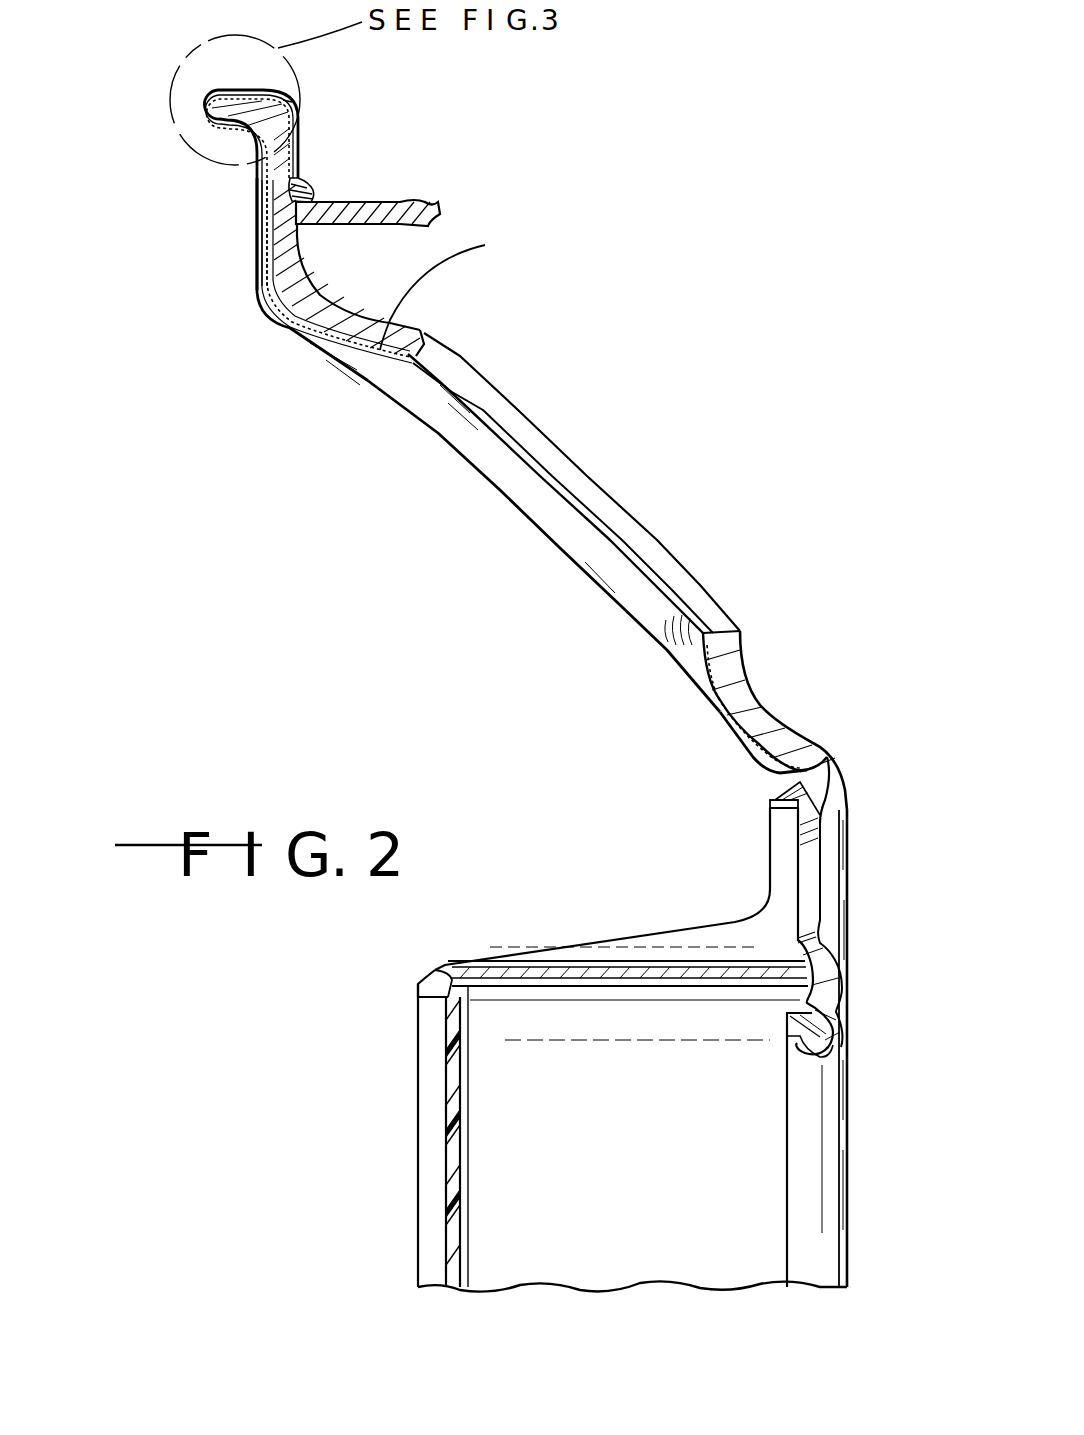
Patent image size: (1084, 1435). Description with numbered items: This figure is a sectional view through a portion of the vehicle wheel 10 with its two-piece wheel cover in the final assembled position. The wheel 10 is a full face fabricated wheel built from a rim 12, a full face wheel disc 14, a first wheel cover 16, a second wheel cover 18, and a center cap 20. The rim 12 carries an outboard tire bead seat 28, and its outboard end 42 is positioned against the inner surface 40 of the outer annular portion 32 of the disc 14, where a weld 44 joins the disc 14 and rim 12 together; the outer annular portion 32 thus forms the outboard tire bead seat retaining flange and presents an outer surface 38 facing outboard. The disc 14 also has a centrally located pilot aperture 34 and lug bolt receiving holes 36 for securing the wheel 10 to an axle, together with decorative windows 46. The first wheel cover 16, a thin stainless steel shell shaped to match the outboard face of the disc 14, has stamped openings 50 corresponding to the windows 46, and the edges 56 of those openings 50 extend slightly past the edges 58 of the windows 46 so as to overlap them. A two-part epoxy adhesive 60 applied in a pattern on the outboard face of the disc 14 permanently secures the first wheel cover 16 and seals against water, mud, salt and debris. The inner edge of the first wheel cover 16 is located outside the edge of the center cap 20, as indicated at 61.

The vehicle wheel 10 is at (690, 330).
The rim 12 is at (430, 197).
The full face wheel disc 14 is at (762, 706).
The first wheel cover 16 is at (720, 733).
The second wheel cover 18 is at (250, 88).
The center cap 20 is at (446, 1166).
The outboard tire bead seat 28 is at (350, 200).
The outer annular portion 32 is at (282, 118).
The pilot aperture 34 is at (810, 1048).
The lug bolt receiving holes 36 is at (818, 910).
The outer surface 38 is at (257, 255).
The inner surface 40 is at (303, 247).
The outboard end 42 is at (257, 211).
The weld 44 is at (300, 192).
The decorative windows 46 is at (440, 336).
The openings 50 is at (423, 358).
The edges of the first wheel cover openings 56 is at (705, 616).
The edges of the windows 58 is at (728, 628).
The adhesive 60 is at (453, 287).
The inner edge location of first wheel cover 61 is at (825, 762).